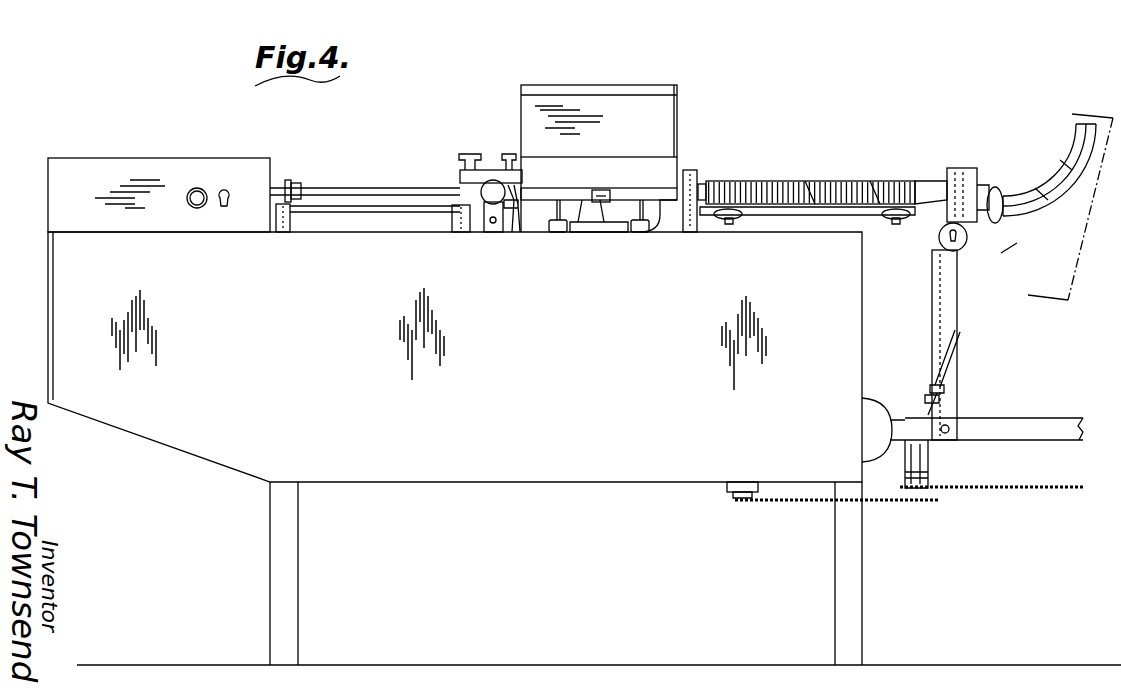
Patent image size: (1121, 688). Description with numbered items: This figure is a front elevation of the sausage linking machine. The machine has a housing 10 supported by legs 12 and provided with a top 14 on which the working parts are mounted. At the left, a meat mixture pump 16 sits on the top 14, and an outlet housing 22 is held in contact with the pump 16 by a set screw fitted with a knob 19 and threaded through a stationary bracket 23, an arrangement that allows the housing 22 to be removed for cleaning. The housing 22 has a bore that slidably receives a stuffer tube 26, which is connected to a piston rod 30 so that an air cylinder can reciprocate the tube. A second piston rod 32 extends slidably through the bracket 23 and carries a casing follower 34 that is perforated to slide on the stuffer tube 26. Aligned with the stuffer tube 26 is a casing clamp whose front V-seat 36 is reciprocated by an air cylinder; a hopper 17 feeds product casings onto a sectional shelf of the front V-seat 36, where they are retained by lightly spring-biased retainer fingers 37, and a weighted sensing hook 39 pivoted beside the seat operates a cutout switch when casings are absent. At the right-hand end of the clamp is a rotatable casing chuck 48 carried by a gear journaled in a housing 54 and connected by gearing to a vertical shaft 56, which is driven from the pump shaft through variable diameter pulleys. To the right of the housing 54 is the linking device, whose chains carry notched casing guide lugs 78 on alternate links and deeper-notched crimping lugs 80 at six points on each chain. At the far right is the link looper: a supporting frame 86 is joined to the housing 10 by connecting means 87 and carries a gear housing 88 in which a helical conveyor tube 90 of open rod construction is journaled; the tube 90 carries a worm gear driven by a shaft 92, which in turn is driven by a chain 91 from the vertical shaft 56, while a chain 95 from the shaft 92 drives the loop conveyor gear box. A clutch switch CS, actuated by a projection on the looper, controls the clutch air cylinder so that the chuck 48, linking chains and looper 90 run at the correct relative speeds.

The housing 10 is at (517, 468).
The legs 12 is at (300, 573).
The top 14 is at (354, 224).
The meat mixture pump 16 is at (486, 172).
The hopper 17 is at (668, 104).
The knob 19 is at (500, 188).
The outlet housing 22 is at (470, 228).
The stationary bracket 23 is at (493, 228).
The stuffer tube 26 is at (395, 190).
The piston rod 30 is at (290, 184).
The piston rod 32 is at (322, 213).
The casing follower 34 is at (520, 218).
The front V-seat 36 is at (635, 190).
The retainer fingers 37 is at (557, 208).
The weighted sensing hook 39 is at (603, 190).
The casing chuck 48 is at (703, 184).
The housing 54 is at (690, 170).
The vertical shaft 56 is at (743, 498).
The casing guide lugs 78 is at (770, 183).
The crimping lugs 80 is at (872, 182).
The supporting frame 86 is at (1055, 418).
The connecting means 87 is at (862, 424).
The gear housing 88 is at (968, 170).
The helical conveyor tube 90 is at (1040, 210).
The chain 91 is at (875, 502).
The shaft 92 is at (926, 346).
The chain 95 is at (1020, 490).
The clutch switch CS is at (962, 226).